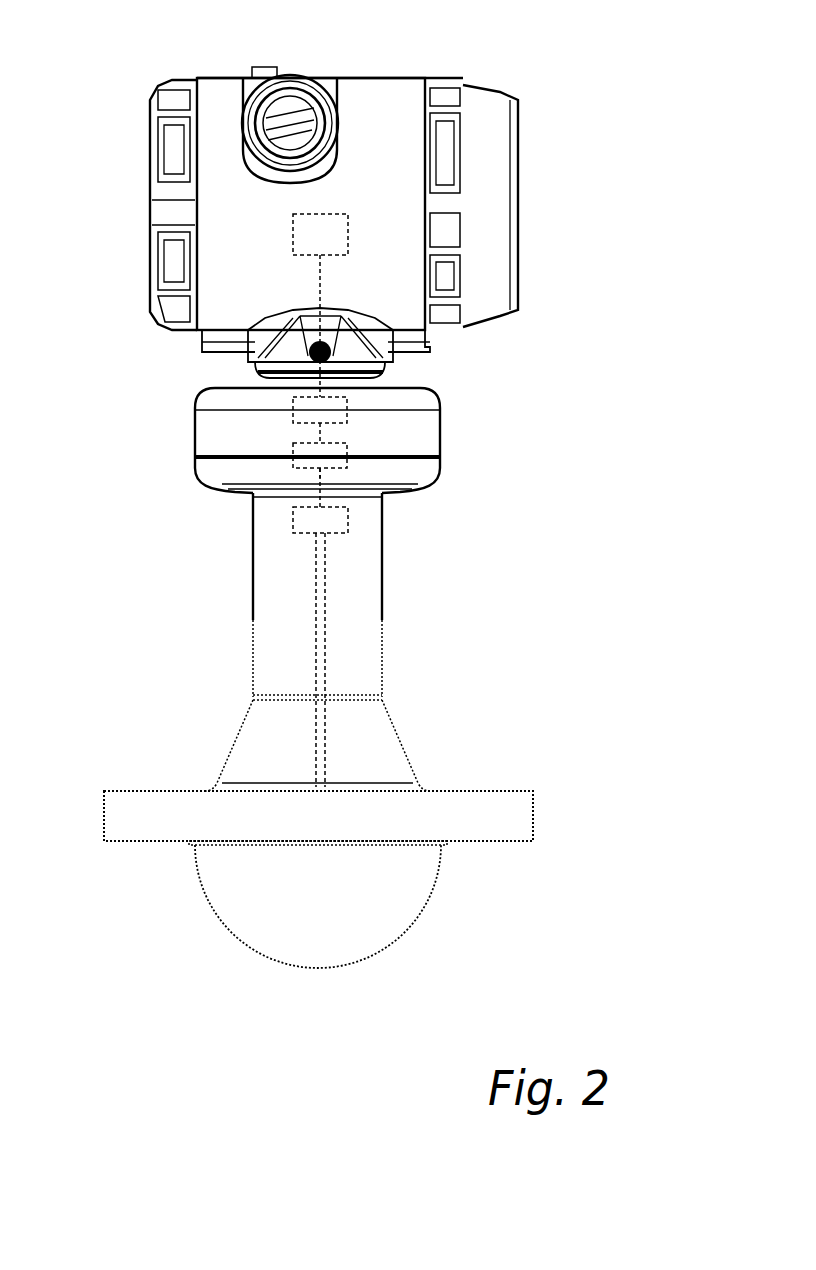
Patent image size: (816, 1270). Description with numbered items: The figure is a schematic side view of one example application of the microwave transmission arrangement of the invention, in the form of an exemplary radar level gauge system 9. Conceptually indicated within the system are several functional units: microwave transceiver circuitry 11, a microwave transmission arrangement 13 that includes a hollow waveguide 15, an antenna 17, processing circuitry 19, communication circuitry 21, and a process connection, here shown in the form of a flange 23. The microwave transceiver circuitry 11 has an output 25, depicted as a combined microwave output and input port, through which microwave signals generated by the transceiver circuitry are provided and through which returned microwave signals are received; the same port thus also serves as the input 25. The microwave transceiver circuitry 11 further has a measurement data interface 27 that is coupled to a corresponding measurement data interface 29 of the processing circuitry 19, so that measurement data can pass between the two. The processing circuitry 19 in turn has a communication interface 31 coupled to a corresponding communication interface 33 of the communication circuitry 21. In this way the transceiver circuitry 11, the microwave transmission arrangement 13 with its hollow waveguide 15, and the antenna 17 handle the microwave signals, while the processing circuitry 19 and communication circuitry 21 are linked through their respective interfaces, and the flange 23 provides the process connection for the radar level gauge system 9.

The radar level gauge system 9 is at (580, 82).
The microwave transceiver circuitry 11 is at (347, 460).
The microwave transmission arrangement 13 is at (366, 533).
The hollow waveguide 15 is at (325, 660).
The antenna 17 is at (222, 922).
The processing circuitry 19 is at (280, 410).
The communication circuitry 21 is at (293, 234).
The flange 23 is at (543, 782).
The output 25 is at (320, 468).
The measurement data interface 27 is at (323, 442).
The measurement data interface 29 is at (293, 460).
The communication interface 31 is at (322, 398).
The communication interface 33 is at (320, 256).